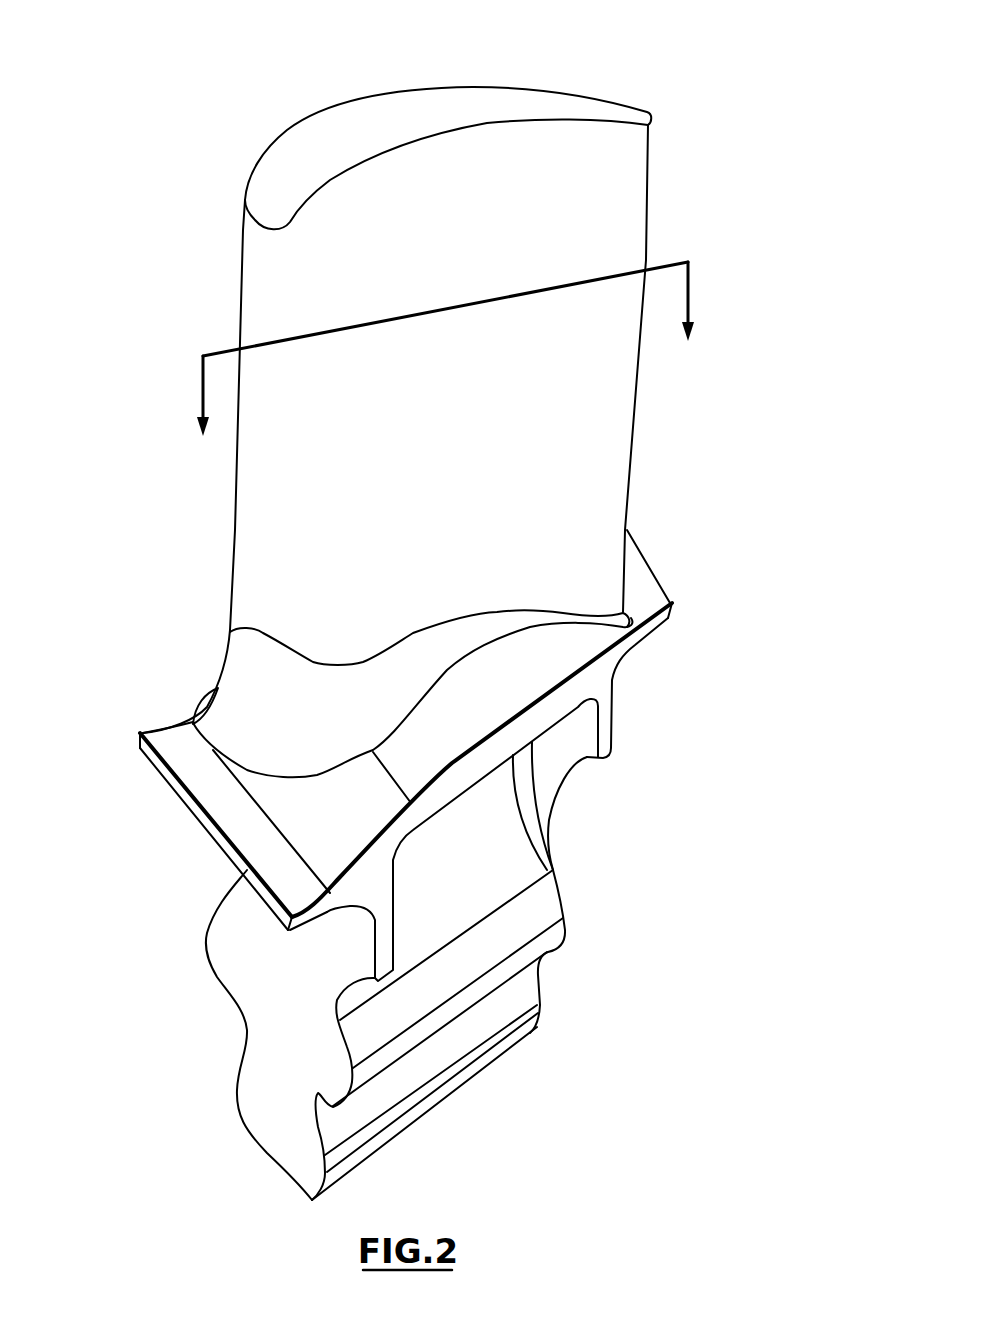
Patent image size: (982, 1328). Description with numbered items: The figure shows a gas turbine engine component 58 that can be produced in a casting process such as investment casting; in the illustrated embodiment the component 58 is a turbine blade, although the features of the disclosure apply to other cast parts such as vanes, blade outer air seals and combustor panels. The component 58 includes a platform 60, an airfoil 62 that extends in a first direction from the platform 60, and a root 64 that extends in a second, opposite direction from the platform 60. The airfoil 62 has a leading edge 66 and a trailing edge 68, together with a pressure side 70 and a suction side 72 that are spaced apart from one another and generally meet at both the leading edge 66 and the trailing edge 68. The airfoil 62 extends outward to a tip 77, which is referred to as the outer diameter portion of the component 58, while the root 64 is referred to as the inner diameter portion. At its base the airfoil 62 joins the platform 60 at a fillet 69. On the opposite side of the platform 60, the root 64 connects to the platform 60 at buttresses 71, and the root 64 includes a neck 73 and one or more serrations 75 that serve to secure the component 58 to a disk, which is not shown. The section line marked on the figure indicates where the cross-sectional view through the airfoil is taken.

The component 58 is at (105, 160).
The platform 60 is at (648, 593).
The airfoil 62 is at (590, 411).
The root 64 is at (278, 1027).
The leading edge 66 is at (237, 507).
The trailing edge 68 is at (630, 493).
The fillet 69 is at (245, 682).
The pressure side 70 is at (606, 168).
The buttresses 71 is at (610, 733).
The suction side 72 is at (393, 68).
The neck 73 is at (495, 836).
The serrations 75 is at (523, 1028).
The tip 77 is at (485, 88).